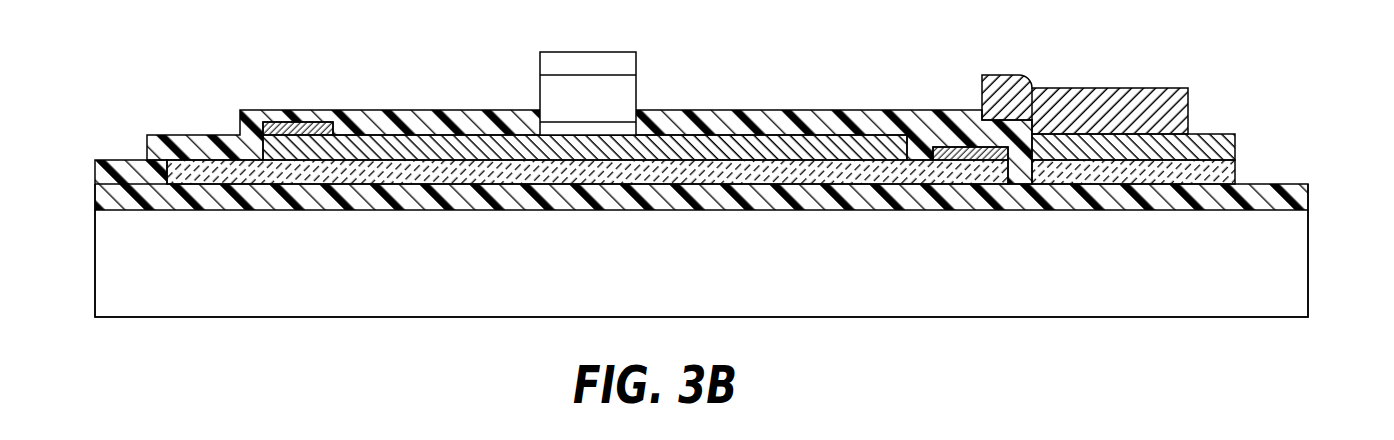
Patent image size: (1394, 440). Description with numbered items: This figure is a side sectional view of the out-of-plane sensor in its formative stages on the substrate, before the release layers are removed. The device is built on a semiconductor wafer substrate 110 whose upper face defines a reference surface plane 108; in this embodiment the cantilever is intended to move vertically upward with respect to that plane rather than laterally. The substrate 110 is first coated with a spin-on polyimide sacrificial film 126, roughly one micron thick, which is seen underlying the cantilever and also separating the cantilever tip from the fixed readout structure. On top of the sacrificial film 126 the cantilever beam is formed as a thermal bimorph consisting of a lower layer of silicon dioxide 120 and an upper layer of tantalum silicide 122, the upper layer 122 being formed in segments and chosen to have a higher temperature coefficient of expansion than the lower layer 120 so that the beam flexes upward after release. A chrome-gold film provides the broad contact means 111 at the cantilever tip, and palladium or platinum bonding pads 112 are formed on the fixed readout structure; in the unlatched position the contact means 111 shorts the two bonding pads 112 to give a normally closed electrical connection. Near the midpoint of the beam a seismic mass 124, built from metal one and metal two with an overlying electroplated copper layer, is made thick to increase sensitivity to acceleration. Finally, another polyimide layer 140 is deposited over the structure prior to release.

The reference surface plane 108 is at (1257, 210).
The substrate 110 is at (693, 277).
The sacrificial film 126 is at (100, 198).
The lower layer of silicon dioxide 120 is at (221, 172).
The upper layer of tantalum silicide 122 is at (353, 150).
The polyimide layer 140 is at (450, 120).
The contact means 111 is at (955, 147).
The bonding pads 112 is at (1125, 90).
The seismic mass 124 is at (637, 62).